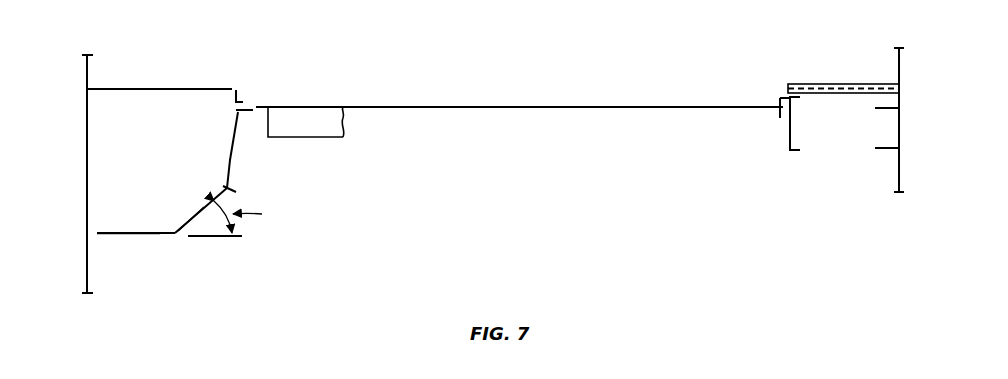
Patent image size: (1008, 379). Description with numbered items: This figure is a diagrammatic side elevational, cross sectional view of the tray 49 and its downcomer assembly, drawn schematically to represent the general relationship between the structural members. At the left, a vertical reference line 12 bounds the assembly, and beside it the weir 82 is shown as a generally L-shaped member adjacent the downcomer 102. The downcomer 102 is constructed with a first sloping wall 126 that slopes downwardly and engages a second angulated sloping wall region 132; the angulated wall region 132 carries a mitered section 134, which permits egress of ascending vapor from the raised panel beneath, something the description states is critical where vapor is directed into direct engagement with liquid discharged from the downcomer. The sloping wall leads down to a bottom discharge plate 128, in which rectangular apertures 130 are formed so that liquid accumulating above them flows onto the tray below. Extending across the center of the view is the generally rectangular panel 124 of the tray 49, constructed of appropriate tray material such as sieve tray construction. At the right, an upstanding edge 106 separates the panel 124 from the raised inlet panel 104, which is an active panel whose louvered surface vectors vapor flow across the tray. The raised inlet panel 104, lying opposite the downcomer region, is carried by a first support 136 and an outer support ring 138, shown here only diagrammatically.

The reference plane line 12 is at (85, 152).
The tray 49 is at (519, 93).
The weir 82 is at (236, 96).
The downcomer 102 is at (216, 175).
The raised inlet panel 104 is at (830, 84).
The upstanding edge 106 is at (784, 93).
The panel 124 is at (537, 105).
The first sloping wall 126 is at (232, 137).
The bottom discharge plate 128 is at (143, 232).
The rectangular apertures 130 is at (120, 236).
The angulated sloping wall region 132 is at (216, 197).
The mitered section 134 is at (196, 238).
The first support 136 is at (788, 146).
The outer support ring 138 is at (880, 110).